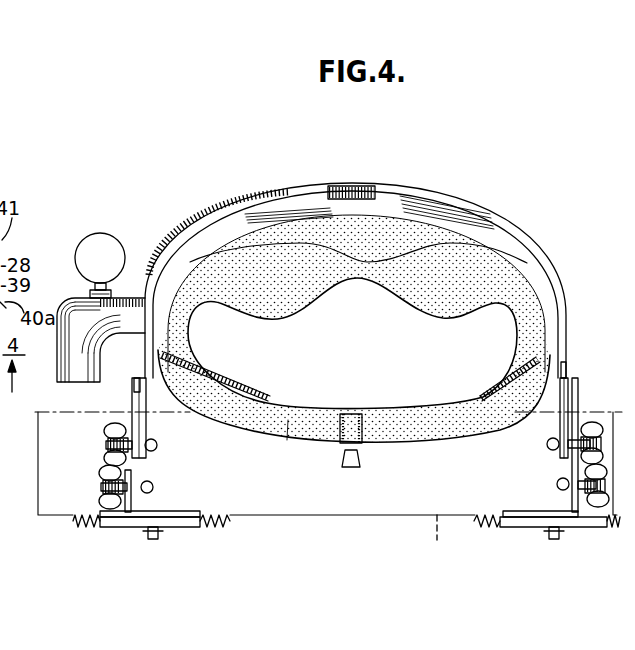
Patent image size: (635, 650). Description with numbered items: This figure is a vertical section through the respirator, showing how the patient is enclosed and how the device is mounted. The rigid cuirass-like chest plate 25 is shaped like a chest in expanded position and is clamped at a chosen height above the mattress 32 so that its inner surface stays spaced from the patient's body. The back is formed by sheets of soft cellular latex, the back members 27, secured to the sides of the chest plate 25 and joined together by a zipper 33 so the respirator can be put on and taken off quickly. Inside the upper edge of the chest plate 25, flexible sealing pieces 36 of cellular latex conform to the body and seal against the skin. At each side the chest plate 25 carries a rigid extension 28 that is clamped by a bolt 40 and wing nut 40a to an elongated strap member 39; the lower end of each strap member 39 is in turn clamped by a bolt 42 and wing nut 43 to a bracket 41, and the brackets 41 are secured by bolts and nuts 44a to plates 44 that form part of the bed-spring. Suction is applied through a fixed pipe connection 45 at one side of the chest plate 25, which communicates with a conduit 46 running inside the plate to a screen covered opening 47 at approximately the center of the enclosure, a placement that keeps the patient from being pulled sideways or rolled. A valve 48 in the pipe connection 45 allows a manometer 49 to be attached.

The chest plate 25 is at (402, 193).
The back members 27 is at (288, 422).
The rigid extensions 28 is at (138, 380).
The mattress 32 is at (328, 488).
The zipper 33 is at (363, 438).
The sealing pieces 36 is at (284, 320).
The strap members 39 is at (132, 401).
The bolts 40 is at (158, 446).
The wing nuts 40a is at (105, 431).
The brackets 41 is at (133, 508).
The bolts 42 is at (154, 487).
The wing nuts 43 is at (99, 473).
The plates 44 is at (116, 528).
The bolts and nuts 44a is at (161, 535).
The pipe connection 45 is at (74, 306).
The conduit 46 is at (272, 200).
The screen covered opening 47 is at (360, 186).
The valve 48 is at (110, 297).
The manometer 49 is at (105, 233).